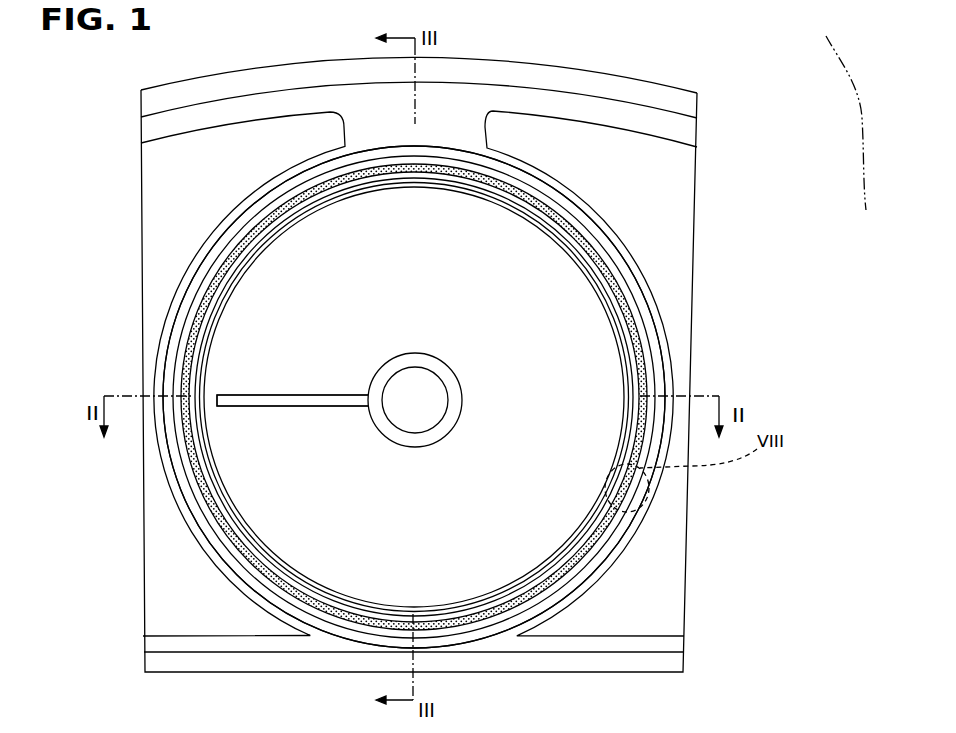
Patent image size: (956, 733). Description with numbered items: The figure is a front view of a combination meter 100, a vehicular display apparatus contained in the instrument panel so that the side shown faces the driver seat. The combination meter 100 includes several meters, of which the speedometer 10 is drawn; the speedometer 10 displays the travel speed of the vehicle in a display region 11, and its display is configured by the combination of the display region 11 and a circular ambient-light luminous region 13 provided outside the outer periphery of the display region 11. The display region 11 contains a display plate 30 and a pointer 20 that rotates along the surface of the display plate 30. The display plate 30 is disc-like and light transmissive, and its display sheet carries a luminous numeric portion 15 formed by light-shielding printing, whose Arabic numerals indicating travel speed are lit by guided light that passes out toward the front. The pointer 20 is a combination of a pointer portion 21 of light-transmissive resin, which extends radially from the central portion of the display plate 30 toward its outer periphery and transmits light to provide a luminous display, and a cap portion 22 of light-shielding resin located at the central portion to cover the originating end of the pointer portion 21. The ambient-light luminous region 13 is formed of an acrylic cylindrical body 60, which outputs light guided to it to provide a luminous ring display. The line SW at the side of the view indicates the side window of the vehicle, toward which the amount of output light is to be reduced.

The combination meter 100 is at (755, 37).
The speedometer 10 is at (602, 172).
The display region 11 is at (606, 339).
The ambient-light luminous region 13 is at (618, 242).
The luminous numeric portion 15 is at (626, 292).
The acrylic cylindrical body 60 is at (590, 224).
The display plate 30 is at (270, 517).
The pointer 20 is at (234, 412).
The pointer portion 21 is at (228, 446).
The cap portion 22 is at (384, 440).
The side window SW is at (848, 103).